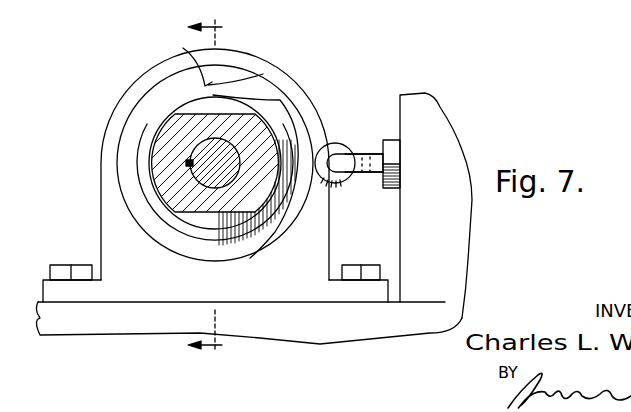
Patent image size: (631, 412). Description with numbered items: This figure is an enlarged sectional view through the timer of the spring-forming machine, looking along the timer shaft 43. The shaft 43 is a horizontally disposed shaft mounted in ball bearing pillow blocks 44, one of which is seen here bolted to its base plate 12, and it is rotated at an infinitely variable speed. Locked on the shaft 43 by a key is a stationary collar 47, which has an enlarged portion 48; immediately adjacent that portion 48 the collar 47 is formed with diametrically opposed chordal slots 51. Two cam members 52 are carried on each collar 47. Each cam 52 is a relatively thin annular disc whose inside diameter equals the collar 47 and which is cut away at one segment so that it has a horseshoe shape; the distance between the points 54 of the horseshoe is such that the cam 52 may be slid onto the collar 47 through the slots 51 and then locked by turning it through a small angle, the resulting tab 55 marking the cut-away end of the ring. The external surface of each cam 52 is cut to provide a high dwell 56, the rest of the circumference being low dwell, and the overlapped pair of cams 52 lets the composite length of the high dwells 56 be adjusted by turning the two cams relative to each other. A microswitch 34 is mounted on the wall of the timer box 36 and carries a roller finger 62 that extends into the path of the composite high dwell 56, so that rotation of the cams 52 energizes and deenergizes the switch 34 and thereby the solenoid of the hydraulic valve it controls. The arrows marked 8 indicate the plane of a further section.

The section line 8- 8 is at (205, 191).
The base plate 12 is at (456, 314).
The microswitch 34 is at (395, 152).
The timer box 36 is at (460, 160).
The timer shaft 43 is at (228, 152).
The ball bearing pillow block 44 is at (250, 52).
The stationary collar 47 is at (262, 143).
The enlarged portion 48 is at (232, 73).
The chordal slot 51 is at (200, 110).
The cam member 52 is at (150, 135).
The points of the horseshoe 54 is at (164, 112).
The ring tab 55 is at (183, 61).
The high dwell 56 is at (294, 112).
The roller finger 62 is at (368, 152).